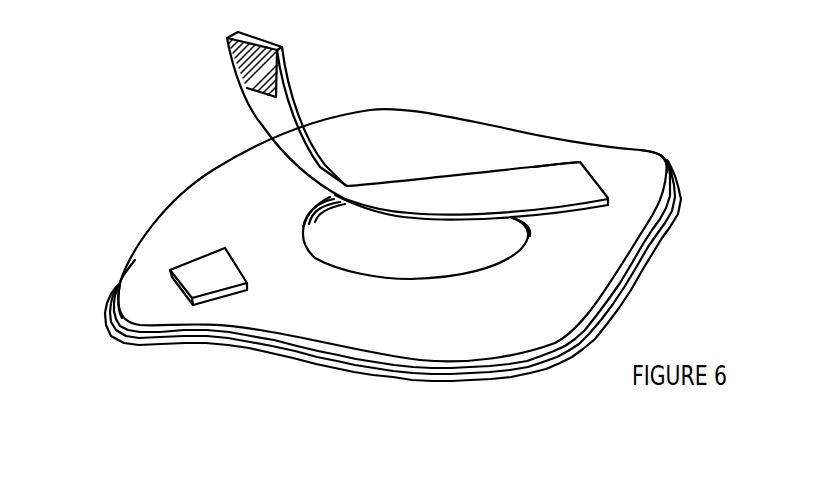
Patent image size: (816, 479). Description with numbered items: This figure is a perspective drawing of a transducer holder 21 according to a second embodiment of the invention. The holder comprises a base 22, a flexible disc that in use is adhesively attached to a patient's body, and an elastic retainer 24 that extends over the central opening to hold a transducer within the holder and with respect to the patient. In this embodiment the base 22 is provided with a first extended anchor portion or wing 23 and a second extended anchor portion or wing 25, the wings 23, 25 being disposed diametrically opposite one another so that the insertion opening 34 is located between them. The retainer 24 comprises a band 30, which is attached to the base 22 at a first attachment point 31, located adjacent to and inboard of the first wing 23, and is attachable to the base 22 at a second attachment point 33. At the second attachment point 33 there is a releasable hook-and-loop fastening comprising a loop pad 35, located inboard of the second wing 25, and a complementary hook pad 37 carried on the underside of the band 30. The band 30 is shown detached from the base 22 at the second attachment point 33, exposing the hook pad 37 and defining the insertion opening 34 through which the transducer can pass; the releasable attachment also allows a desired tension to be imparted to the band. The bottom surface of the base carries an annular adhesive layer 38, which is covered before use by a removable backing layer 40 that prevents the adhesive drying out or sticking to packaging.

The transducer holder 21 is at (384, 226).
The base 22 is at (404, 282).
The first extended anchor portion or wing 23 is at (652, 163).
The elastic retainer 24 is at (451, 161).
The second extended anchor portion or wing 25 is at (143, 298).
The band 30 is at (380, 115).
The first attachment point 31 is at (582, 197).
The second attachment point 33 is at (165, 291).
The insertion opening 34 is at (224, 204).
The loop pad 35 is at (190, 300).
The hook pad 37 is at (242, 70).
The adhesive layer 38 is at (638, 240).
The removable backing layer 40 is at (655, 223).